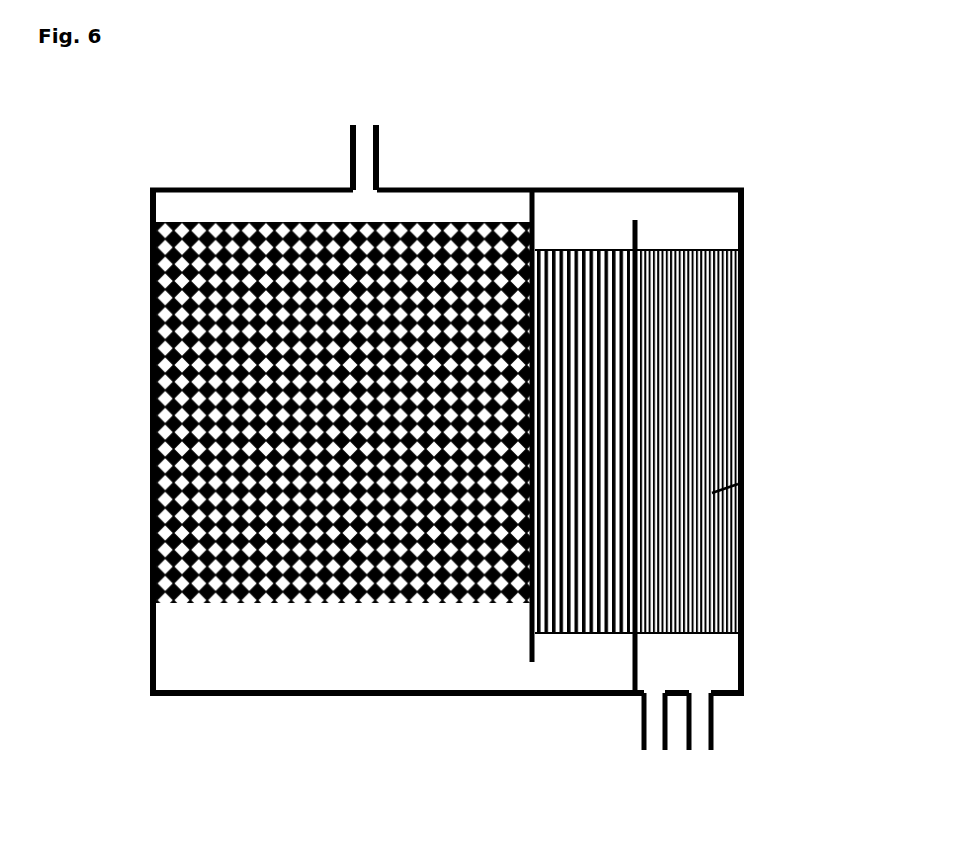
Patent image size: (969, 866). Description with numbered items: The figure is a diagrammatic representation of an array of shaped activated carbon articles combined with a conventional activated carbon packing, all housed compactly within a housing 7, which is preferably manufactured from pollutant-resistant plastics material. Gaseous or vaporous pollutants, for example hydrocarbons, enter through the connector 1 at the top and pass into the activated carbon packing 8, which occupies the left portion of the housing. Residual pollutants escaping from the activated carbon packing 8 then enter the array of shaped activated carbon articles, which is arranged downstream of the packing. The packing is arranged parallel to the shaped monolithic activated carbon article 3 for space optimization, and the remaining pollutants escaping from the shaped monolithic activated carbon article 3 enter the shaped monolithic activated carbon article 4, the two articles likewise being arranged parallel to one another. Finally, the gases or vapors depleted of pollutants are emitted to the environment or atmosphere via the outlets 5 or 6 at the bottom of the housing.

The connector 1 is at (368, 160).
The shaped monolithic activated carbon article 3 is at (605, 343).
The shaped monolithic activated carbon article 4 is at (695, 542).
The outlet 5 is at (657, 737).
The outlet 6 is at (698, 738).
The housing 7 is at (480, 183).
The activated carbon packing 8 is at (367, 512).